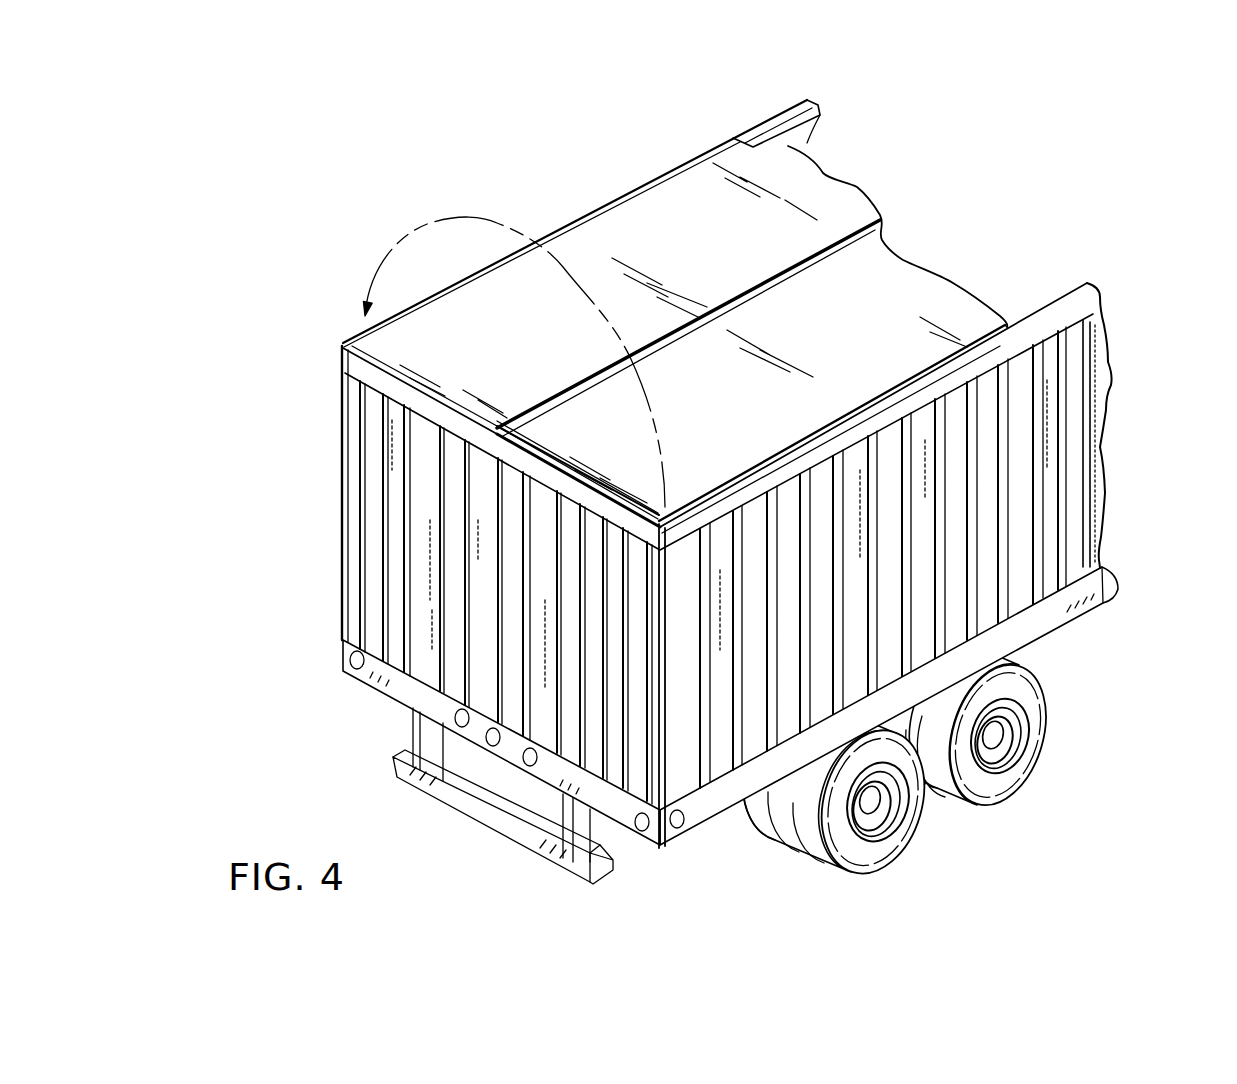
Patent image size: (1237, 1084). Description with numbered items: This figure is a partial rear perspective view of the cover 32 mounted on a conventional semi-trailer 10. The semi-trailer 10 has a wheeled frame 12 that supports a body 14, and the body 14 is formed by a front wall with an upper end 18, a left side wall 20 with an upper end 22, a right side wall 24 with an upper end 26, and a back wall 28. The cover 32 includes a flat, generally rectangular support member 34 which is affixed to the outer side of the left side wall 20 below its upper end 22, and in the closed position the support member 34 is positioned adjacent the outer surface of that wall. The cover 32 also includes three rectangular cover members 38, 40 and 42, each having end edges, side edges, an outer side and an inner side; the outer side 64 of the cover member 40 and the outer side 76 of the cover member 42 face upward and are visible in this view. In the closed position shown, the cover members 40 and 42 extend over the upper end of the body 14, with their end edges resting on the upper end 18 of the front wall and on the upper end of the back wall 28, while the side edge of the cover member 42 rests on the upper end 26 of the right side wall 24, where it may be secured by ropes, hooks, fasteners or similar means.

The semi-trailer 10 is at (1077, 240).
The wheeled frame 12 is at (1045, 685).
The body 14 is at (1070, 487).
The upper end of front wall 18 is at (882, 138).
The left side wall 20 is at (810, 148).
The upper end of left side wall 22 is at (782, 118).
The right side wall 24 is at (953, 577).
The upper end of right side wall 26 is at (1062, 302).
The back wall 28 is at (420, 567).
The cover 32 is at (930, 270).
The support member 34 is at (343, 488).
The cover member 38 is at (345, 390).
The cover member 40 is at (477, 337).
The cover member 42 is at (883, 317).
The outer side of cover member 64 is at (694, 244).
The outer side of cover member 76 is at (810, 329).